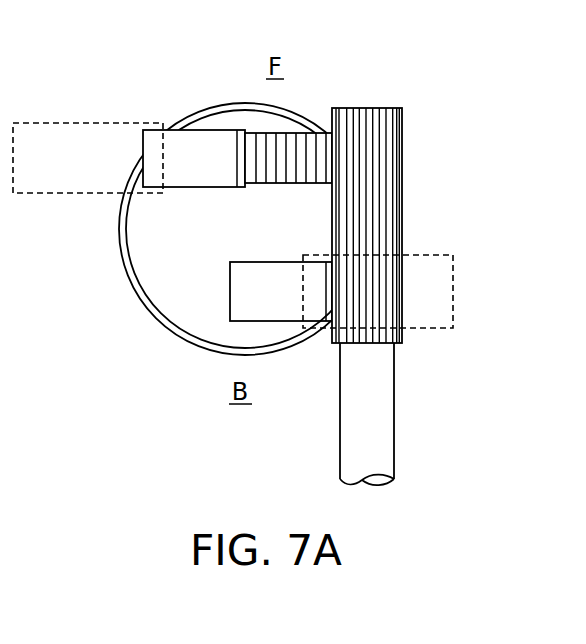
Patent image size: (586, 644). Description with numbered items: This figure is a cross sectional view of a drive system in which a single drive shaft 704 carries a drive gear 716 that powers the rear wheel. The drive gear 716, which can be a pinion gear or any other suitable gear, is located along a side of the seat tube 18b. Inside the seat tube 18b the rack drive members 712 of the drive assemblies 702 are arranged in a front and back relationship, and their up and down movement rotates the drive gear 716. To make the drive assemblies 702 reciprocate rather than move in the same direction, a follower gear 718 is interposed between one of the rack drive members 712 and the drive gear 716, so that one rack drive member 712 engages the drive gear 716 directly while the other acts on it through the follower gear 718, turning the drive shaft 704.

The seat tube 18b is at (112, 262).
The drive assembly 702 is at (84, 98).
The drive shaft 704 is at (368, 430).
The rack drive member 712 is at (207, 145).
The drive gear 716 is at (382, 160).
The follower gear 718 is at (293, 120).